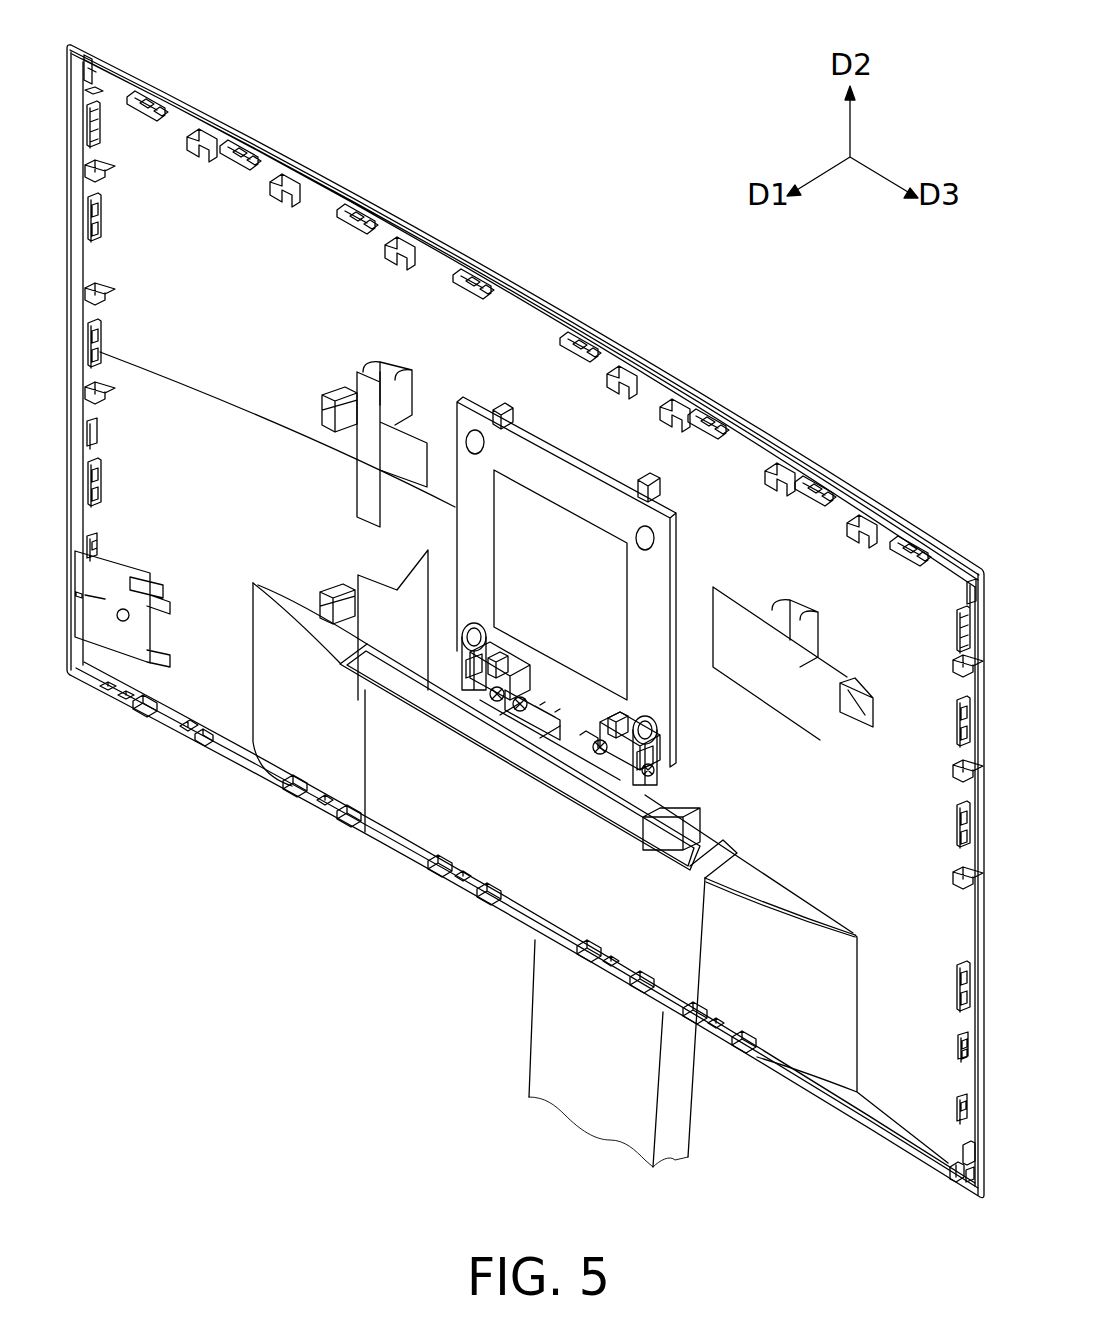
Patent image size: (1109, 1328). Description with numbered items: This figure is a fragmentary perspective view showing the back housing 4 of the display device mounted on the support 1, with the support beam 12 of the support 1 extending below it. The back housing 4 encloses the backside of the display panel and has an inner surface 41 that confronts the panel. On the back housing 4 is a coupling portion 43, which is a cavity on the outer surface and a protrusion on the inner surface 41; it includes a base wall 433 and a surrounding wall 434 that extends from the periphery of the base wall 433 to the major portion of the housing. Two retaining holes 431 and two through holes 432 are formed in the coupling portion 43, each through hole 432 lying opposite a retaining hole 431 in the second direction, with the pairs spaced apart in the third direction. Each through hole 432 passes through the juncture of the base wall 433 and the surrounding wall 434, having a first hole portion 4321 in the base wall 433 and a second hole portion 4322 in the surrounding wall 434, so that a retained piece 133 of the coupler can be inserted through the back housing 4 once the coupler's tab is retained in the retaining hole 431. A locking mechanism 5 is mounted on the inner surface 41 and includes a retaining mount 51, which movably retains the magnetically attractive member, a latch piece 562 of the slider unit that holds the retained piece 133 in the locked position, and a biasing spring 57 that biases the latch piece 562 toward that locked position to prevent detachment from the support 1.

The support 1 is at (525, 613).
The support beam 12 is at (678, 1092).
The back housing 4 is at (822, 462).
The inner surface 41 is at (165, 197).
The coupling portion 43 is at (623, 557).
The retaining hole 431 is at (500, 405).
The through hole 432 is at (521, 660).
The first hole portion 4321 is at (493, 655).
The second hole portion 4322 is at (470, 668).
The base wall 433 is at (648, 604).
The surrounding wall 434 is at (675, 800).
The locking mechanism 5 is at (600, 873).
The retaining mount 51 is at (645, 768).
The biasing spring 57 is at (507, 712).
The latch piece 562 is at (497, 687).
The retained piece 133 is at (492, 672).